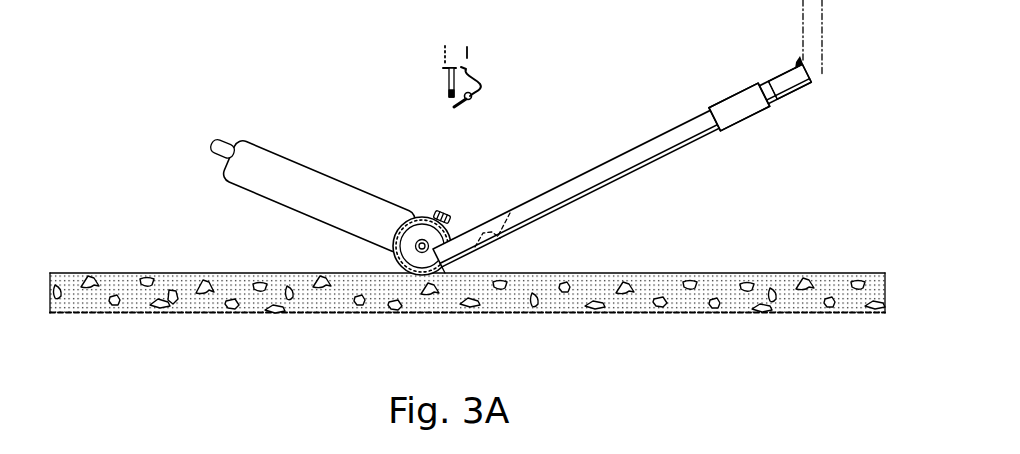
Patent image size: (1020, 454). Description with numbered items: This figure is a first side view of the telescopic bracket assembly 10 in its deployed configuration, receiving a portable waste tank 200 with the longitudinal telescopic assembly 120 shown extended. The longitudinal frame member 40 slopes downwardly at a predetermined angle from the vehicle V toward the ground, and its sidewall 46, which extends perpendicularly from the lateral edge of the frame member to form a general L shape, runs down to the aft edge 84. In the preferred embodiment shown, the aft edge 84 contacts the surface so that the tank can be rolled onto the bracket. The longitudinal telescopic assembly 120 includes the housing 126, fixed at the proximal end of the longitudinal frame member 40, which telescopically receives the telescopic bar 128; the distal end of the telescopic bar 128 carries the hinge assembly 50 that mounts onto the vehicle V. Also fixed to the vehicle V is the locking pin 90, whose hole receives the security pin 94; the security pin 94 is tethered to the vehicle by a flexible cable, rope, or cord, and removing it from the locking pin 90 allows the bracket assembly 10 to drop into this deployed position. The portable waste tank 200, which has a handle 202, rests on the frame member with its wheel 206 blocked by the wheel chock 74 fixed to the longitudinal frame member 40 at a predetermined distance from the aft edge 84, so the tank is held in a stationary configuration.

The telescopic bracket assembly 10 is at (762, 172).
The longitudinal frame member 40 is at (654, 175).
The sidewall 46 is at (578, 188).
The hinge assembly 50 is at (800, 58).
The wheel chock 74 is at (510, 213).
The aft edge 84 is at (470, 270).
The locking pin 90 is at (448, 71).
The security pin 94 is at (473, 99).
The longitudinal telescopic assembly 120 is at (741, 80).
The housing 126 is at (720, 108).
The telescopic bar 128 is at (773, 92).
The portable waste tank 200 is at (256, 198).
The handle 202 is at (210, 153).
The wheel 206 is at (414, 216).
The vehicle V is at (436, 43).